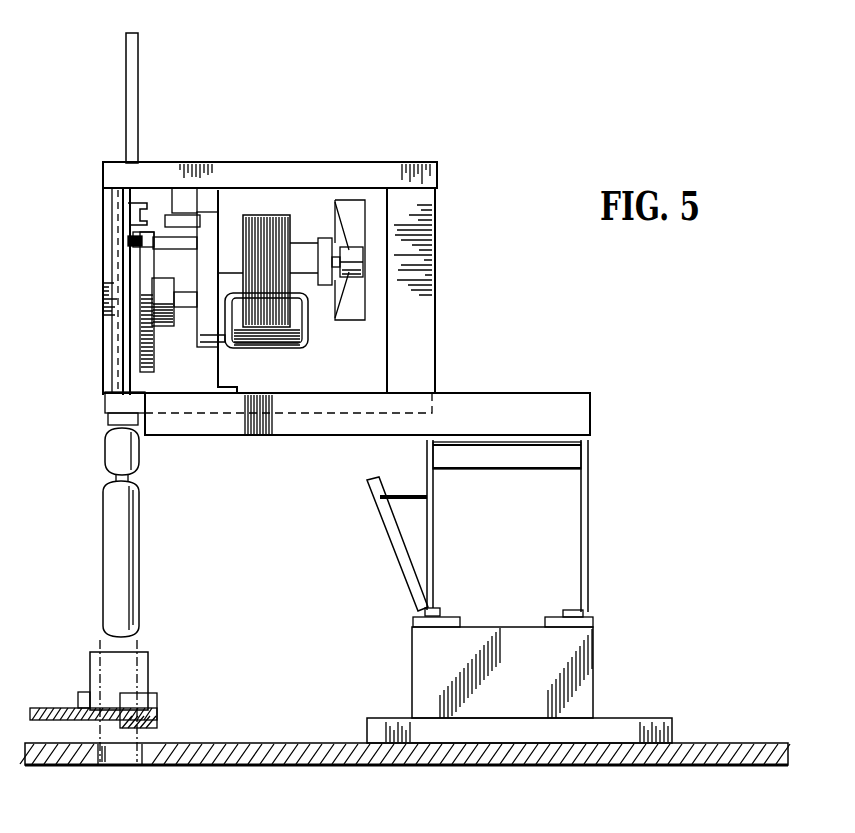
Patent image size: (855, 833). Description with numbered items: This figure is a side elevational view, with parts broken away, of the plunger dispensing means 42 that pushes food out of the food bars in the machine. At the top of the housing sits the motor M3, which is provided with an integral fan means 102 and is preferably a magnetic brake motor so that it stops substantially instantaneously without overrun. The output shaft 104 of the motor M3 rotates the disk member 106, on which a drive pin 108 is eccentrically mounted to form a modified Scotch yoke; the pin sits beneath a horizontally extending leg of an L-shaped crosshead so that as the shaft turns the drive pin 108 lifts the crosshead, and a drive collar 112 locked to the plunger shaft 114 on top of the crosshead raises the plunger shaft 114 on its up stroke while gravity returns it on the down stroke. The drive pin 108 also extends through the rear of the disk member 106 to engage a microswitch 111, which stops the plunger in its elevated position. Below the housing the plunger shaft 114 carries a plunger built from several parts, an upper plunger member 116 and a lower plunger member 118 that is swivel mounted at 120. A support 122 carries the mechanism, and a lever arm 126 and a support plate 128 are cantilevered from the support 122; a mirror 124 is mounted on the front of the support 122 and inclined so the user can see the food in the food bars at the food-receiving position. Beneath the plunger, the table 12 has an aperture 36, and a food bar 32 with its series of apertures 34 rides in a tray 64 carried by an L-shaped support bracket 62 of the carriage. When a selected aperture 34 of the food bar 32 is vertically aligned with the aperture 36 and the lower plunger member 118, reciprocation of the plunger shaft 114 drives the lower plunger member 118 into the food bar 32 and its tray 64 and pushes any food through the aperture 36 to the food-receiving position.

The table 12 is at (752, 745).
The food bar 32 is at (148, 667).
The aperture 34 is at (120, 667).
The aperture 36 is at (138, 755).
The plunger dispensing means 42 is at (312, 165).
The L-shaped support bracket 62 is at (157, 707).
The tray 64 is at (48, 707).
The fan means 102 is at (347, 305).
The output shaft 104 is at (187, 306).
The disk member 106 is at (138, 352).
The drive pin 108 is at (130, 242).
The microswitch 111 is at (178, 215).
The drive collar 112 is at (128, 214).
The plunger shaft 114 is at (137, 103).
The upper plunger member 116 is at (141, 452).
The lower plunger member 118 is at (130, 561).
The swivel mount 120 is at (134, 479).
The support 122 is at (588, 553).
The mirror 124 is at (392, 548).
The lever arm 126 is at (572, 430).
The support plate 128 is at (110, 402).
The motor M3 is at (282, 350).